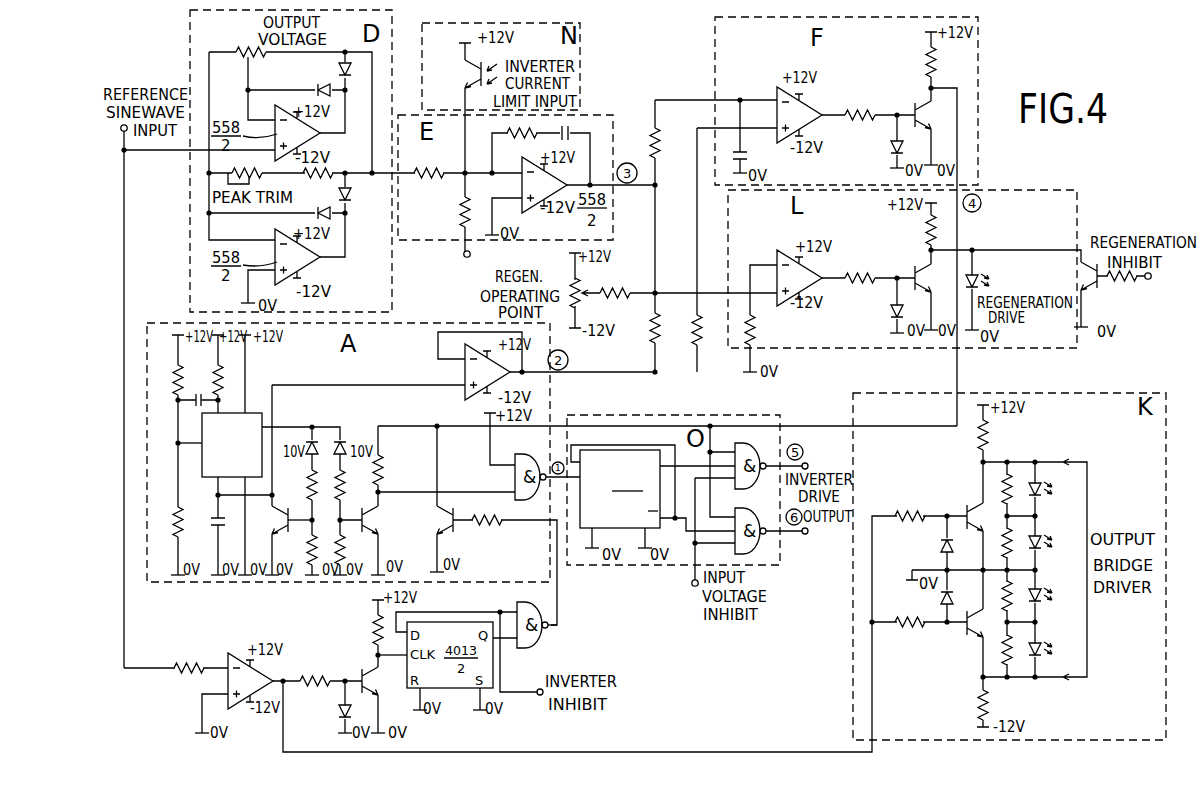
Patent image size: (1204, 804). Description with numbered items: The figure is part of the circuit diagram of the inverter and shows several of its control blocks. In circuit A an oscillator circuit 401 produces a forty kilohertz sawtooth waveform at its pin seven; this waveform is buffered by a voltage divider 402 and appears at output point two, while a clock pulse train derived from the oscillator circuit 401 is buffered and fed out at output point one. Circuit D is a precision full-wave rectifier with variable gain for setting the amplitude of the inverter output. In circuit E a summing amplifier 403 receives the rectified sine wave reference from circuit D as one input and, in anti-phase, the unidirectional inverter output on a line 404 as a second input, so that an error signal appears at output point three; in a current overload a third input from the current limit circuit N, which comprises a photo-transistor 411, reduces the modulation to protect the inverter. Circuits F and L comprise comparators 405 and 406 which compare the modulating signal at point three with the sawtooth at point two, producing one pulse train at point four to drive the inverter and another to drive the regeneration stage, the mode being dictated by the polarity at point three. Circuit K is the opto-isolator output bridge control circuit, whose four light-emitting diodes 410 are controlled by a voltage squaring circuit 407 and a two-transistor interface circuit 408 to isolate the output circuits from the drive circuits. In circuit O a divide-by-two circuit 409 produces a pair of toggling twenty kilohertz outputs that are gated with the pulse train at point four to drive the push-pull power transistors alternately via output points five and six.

The oscillator circuit 401 is at (249, 413).
The voltage divider 402 is at (462, 373).
The summing amplifier 403 is at (523, 185).
The line 404 is at (478, 253).
The comparator 405 is at (777, 98).
The comparator 406 is at (777, 258).
The voltage squaring circuit 407 is at (228, 663).
The two-transistor interface circuit 408 is at (958, 540).
The divide-by-two circuit 409 is at (630, 530).
The light-emitting diodes 410 is at (1042, 538).
The photo-transistor 411 is at (468, 86).